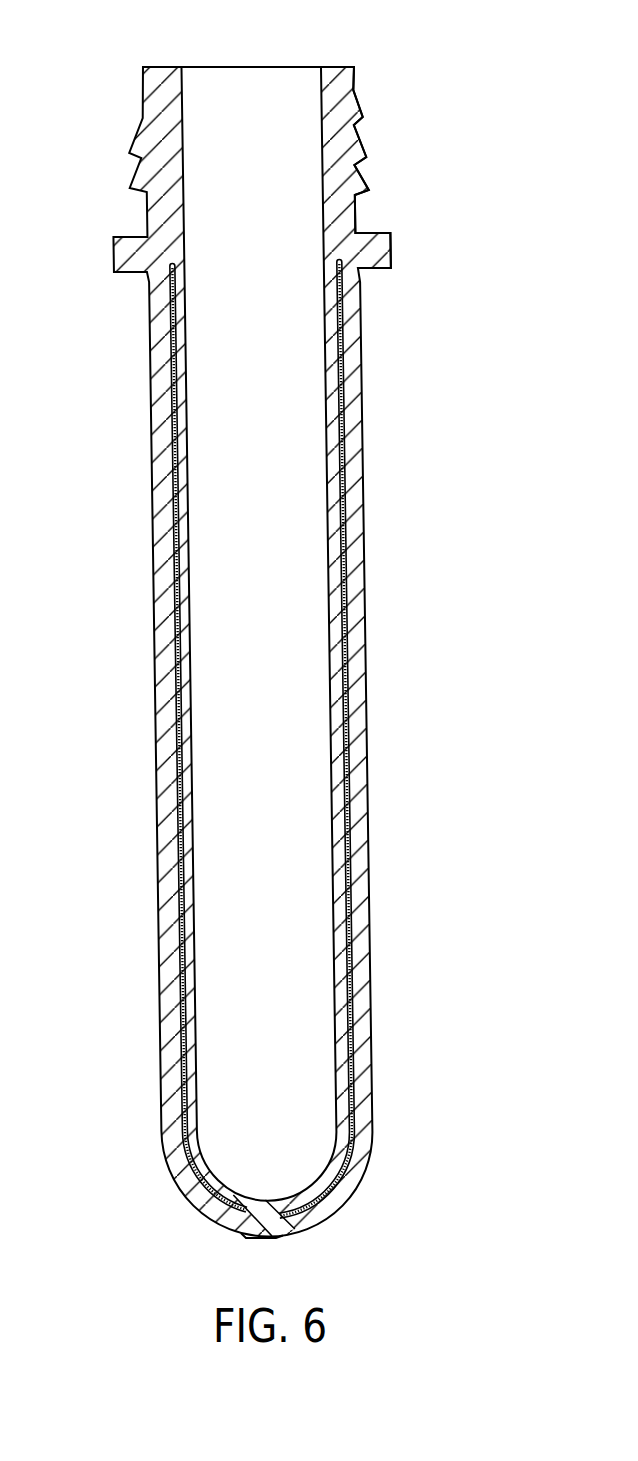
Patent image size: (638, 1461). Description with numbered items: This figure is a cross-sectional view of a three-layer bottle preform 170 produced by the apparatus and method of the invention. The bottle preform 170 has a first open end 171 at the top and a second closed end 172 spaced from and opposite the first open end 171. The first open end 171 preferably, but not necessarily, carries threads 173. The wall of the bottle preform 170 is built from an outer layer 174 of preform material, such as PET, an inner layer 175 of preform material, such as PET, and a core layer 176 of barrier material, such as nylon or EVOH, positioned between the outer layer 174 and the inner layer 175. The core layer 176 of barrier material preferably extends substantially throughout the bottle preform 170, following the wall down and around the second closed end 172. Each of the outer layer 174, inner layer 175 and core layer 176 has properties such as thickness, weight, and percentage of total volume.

The bottle preform 170 is at (379, 769).
The first open end 171 is at (290, 66).
The second closed end 172 is at (278, 1232).
The threads 173 is at (371, 191).
The outer layer 174 is at (343, 403).
The inner layer 175 is at (175, 481).
The core layer 176 is at (170, 377).